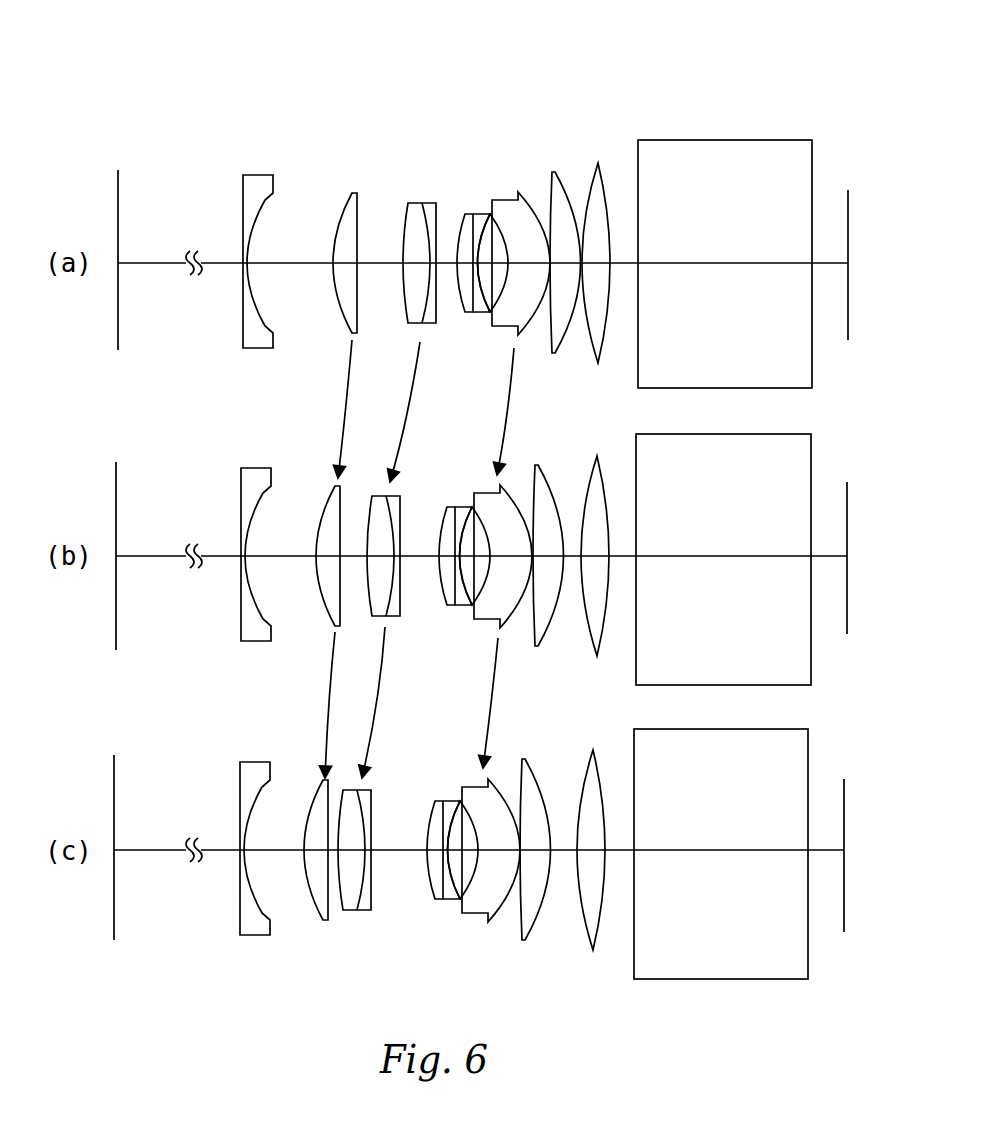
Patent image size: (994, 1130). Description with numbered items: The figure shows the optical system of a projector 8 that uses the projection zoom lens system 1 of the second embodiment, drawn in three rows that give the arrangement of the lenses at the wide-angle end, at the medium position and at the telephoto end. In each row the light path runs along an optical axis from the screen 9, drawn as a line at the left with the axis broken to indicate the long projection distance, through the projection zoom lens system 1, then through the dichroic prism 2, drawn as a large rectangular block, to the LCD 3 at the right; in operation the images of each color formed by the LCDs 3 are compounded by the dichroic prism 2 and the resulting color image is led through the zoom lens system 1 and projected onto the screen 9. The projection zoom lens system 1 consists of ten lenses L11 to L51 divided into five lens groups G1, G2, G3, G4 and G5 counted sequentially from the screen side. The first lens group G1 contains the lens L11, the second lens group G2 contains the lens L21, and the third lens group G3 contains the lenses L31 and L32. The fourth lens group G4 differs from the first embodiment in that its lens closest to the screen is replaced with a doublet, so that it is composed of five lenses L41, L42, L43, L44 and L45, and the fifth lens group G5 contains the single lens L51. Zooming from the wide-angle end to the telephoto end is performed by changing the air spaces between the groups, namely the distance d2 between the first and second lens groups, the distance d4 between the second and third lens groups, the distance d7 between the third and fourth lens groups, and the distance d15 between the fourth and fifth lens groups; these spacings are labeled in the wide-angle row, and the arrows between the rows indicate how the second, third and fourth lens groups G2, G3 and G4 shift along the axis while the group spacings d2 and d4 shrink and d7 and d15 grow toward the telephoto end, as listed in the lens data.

The projection zoom lens system 1 is at (233, 183).
The dichroic prism 2 is at (778, 150).
The LCD 3 is at (848, 205).
The projector 8 is at (710, 88).
The screen 9 is at (118, 207).
The first lens group G1 is at (260, 70).
The second lens group G2 is at (333, 70).
The third lens group G3 is at (435, 70).
The fourth lens group G4 is at (600, 70).
The fifth lens group G5 is at (668, 70).
The lens L11 is at (257, 185).
The lens L21 is at (355, 195).
The lens L31 is at (410, 205).
The lens L32 is at (427, 205).
The lens L41 is at (468, 213).
The lens L42 is at (480, 215).
The lens L43 is at (507, 207).
The lens L44 is at (527, 193).
The lens L45 is at (555, 175).
The lens L51 is at (598, 165).
The distance between the first and second lens groups d2 is at (296, 265).
The distance between the second and third lens groups d4 is at (374, 265).
The distance between the third and fourth lens groups d7 is at (443, 265).
The distance between the fourth and fifth lens groups d15 is at (572, 335).